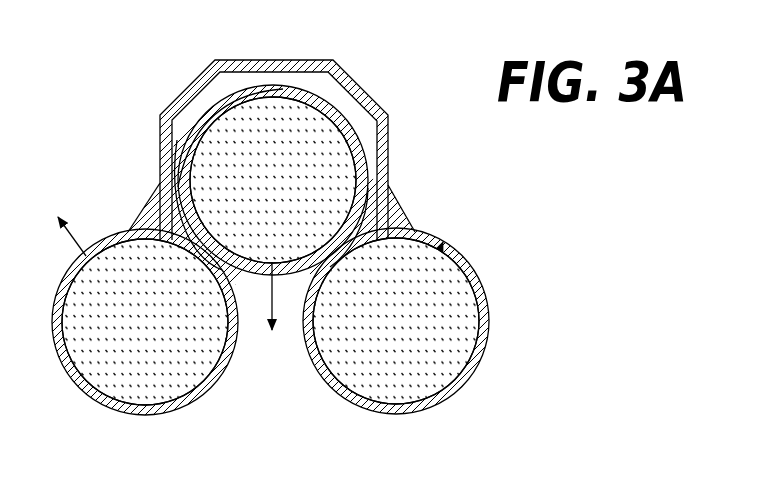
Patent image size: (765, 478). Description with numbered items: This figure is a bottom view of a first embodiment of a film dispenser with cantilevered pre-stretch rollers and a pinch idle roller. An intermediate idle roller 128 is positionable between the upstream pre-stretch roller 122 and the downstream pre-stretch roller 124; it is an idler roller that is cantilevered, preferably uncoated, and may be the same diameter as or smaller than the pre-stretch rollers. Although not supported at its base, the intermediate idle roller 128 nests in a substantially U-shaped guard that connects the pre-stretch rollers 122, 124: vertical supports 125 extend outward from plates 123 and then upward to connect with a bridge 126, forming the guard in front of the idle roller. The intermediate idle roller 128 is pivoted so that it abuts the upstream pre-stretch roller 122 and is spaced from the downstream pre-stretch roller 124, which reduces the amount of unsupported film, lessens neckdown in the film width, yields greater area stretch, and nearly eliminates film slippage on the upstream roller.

The upstream pre-stretch roller 122 is at (395, 413).
The plates 123 is at (122, 265).
The downstream pre-stretch roller 124 is at (138, 408).
The vertical supports 125 is at (160, 137).
The bridge 126 is at (278, 62).
The intermediate idle roller 128 is at (245, 235).